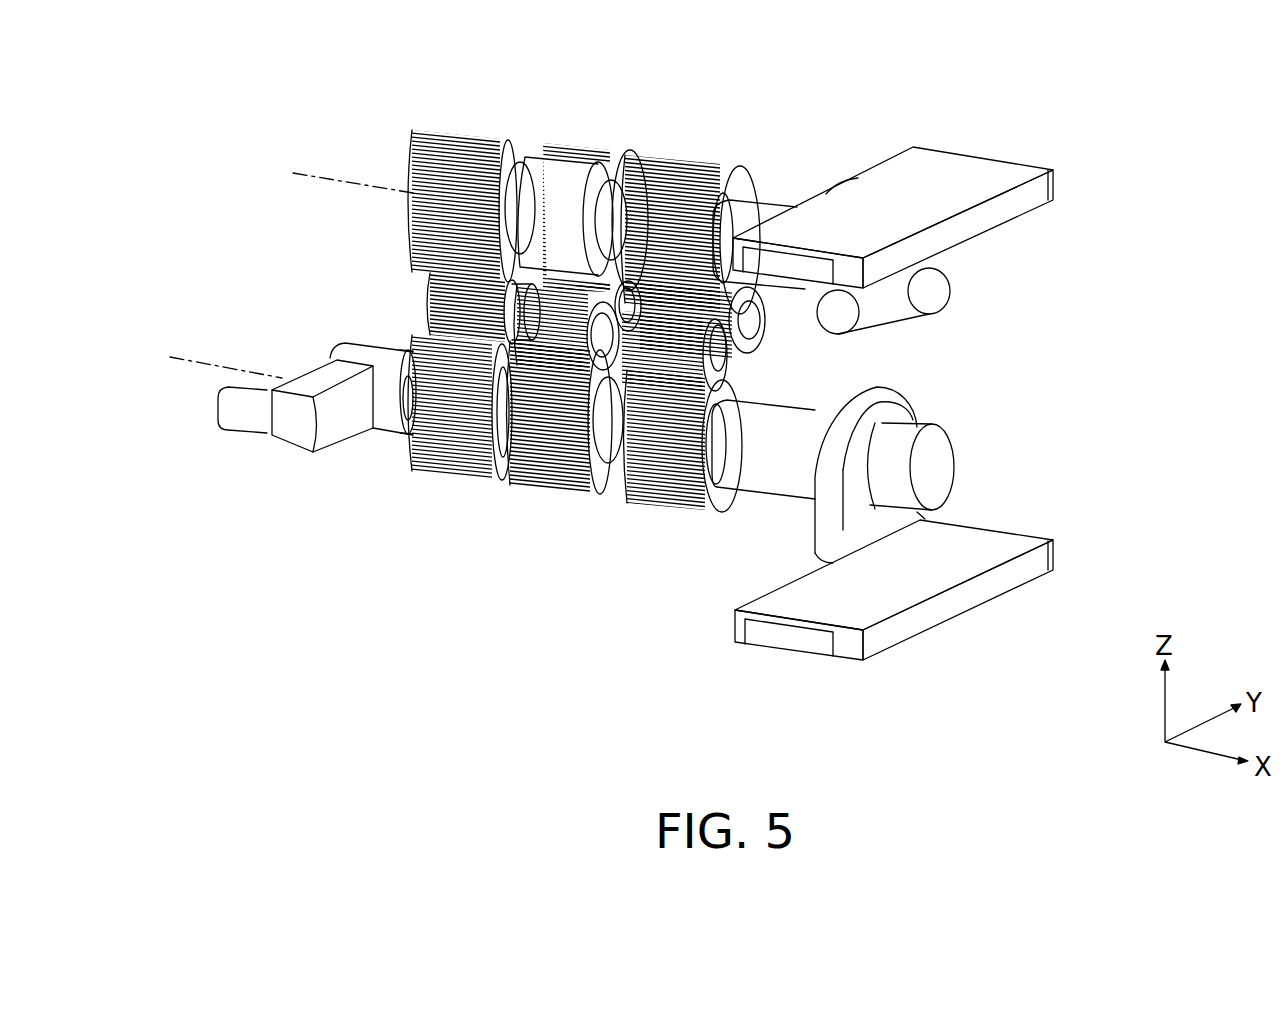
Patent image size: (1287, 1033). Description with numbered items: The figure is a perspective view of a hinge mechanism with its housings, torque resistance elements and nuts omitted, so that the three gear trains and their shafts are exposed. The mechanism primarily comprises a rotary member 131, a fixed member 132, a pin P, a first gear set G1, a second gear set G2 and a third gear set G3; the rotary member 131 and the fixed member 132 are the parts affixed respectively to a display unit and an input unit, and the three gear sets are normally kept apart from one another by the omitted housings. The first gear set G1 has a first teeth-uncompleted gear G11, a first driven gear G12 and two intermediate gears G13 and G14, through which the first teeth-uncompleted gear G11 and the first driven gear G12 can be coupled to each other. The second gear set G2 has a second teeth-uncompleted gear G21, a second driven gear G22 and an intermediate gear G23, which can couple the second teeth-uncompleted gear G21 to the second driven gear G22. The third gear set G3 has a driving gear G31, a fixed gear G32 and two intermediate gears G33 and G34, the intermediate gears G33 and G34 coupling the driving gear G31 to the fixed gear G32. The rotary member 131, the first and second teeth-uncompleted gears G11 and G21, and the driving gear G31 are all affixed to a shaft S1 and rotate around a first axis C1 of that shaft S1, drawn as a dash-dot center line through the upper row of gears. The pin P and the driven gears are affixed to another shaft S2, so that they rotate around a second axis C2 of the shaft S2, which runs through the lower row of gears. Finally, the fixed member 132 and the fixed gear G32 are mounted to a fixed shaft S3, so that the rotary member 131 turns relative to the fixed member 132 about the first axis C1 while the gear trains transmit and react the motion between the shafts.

The first gear set G1 is at (553, 110).
The second gear set G2 is at (449, 100).
The third gear set G3 is at (674, 125).
The first teeth-uncompleted gear G11 is at (597, 145).
The first driven gear G12 is at (575, 495).
The intermediate gear G13 is at (665, 335).
The intermediate gear G14 is at (620, 362).
The second teeth-uncompleted gear G21 is at (490, 135).
The second driven gear G22 is at (465, 478).
The intermediate gear G23 is at (430, 305).
The driving gear G31 is at (700, 155).
The fixed gear G32 is at (697, 510).
The intermediate gear G33 is at (770, 340).
The intermediate gear G34 is at (760, 378).
The shaft S1 is at (772, 212).
The shaft S2 is at (360, 348).
The fixed shaft S3 is at (795, 488).
The first axis C1 is at (335, 177).
The second axis C2 is at (206, 361).
The pin P is at (283, 437).
The rotary member 131 is at (1020, 175).
The fixed member 132 is at (1020, 545).